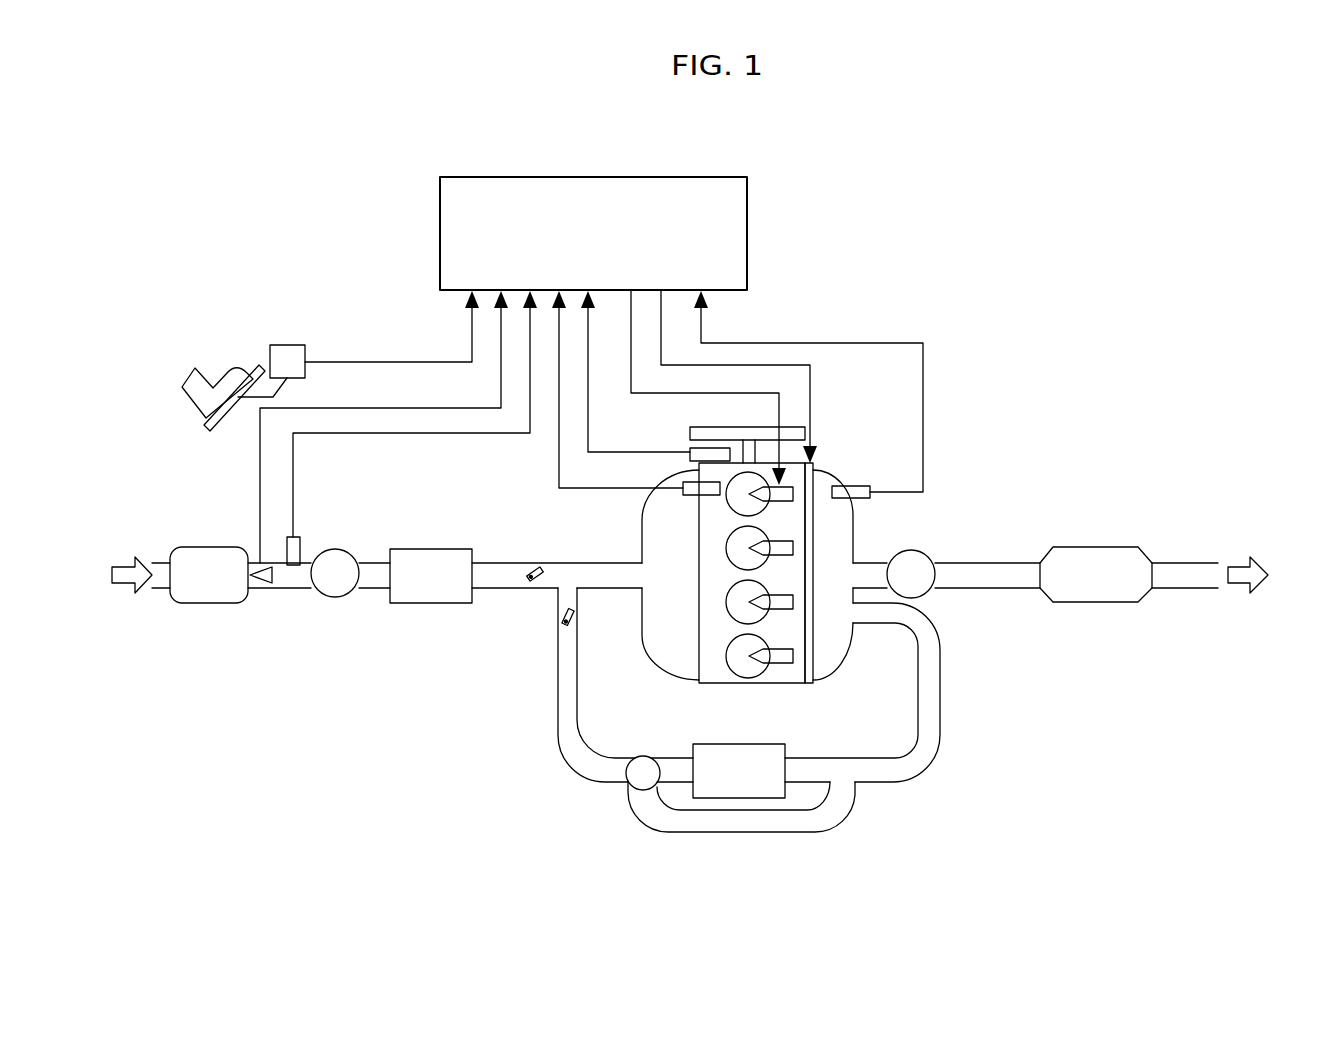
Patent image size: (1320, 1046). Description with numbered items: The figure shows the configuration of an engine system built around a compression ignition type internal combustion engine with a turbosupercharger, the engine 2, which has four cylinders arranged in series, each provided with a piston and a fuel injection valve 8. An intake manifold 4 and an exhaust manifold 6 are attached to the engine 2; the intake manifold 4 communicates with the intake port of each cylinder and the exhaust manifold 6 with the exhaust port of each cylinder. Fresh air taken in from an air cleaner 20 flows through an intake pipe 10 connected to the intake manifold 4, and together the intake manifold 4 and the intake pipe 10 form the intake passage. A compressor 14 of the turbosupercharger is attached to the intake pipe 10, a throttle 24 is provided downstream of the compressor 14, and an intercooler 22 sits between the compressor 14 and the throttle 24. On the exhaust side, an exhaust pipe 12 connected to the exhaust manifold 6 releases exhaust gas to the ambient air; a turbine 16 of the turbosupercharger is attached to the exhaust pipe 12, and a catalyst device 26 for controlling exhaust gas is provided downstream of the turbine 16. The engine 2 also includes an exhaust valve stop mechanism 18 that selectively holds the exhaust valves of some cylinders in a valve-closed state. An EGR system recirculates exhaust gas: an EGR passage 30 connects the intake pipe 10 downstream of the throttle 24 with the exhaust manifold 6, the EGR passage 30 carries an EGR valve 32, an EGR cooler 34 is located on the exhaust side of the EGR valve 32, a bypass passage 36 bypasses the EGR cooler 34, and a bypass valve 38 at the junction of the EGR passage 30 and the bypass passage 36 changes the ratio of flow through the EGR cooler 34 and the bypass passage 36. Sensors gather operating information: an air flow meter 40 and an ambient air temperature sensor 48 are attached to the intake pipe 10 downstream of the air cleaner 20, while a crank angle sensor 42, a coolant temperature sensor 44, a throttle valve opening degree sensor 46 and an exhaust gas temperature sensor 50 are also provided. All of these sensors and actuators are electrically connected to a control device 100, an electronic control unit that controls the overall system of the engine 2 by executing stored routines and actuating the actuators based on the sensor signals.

The engine 2 is at (473, 701).
The intake manifold 4 is at (646, 652).
The exhaust manifold 6 is at (836, 668).
The fuel injection valve 8 is at (780, 666).
The intake pipe 10 is at (292, 590).
The exhaust pipe 12 is at (1007, 562).
The compressor 14 is at (334, 597).
The turbine 16 is at (923, 597).
The exhaust valve stop mechanism 18 is at (808, 684).
The air cleaner 20 is at (211, 547).
The intercooler 22 is at (431, 549).
The throttle 24 is at (530, 582).
The catalyst device 26 is at (1103, 547).
The EGR passage 30 is at (945, 700).
The EGR valve 32 is at (575, 625).
The EGR cooler 34 is at (714, 744).
The bypass passage 36 is at (848, 808).
The bypass valve 38 is at (626, 772).
The air flow meter 40 is at (257, 592).
The crank angle sensor 42 is at (688, 450).
The coolant temperature sensor 44 is at (688, 497).
The throttle valve opening degree sensor 46 is at (288, 345).
The ambient air temperature sensor 48 is at (300, 541).
The exhaust gas temperature sensor 50 is at (858, 486).
The control device 100 is at (748, 229).